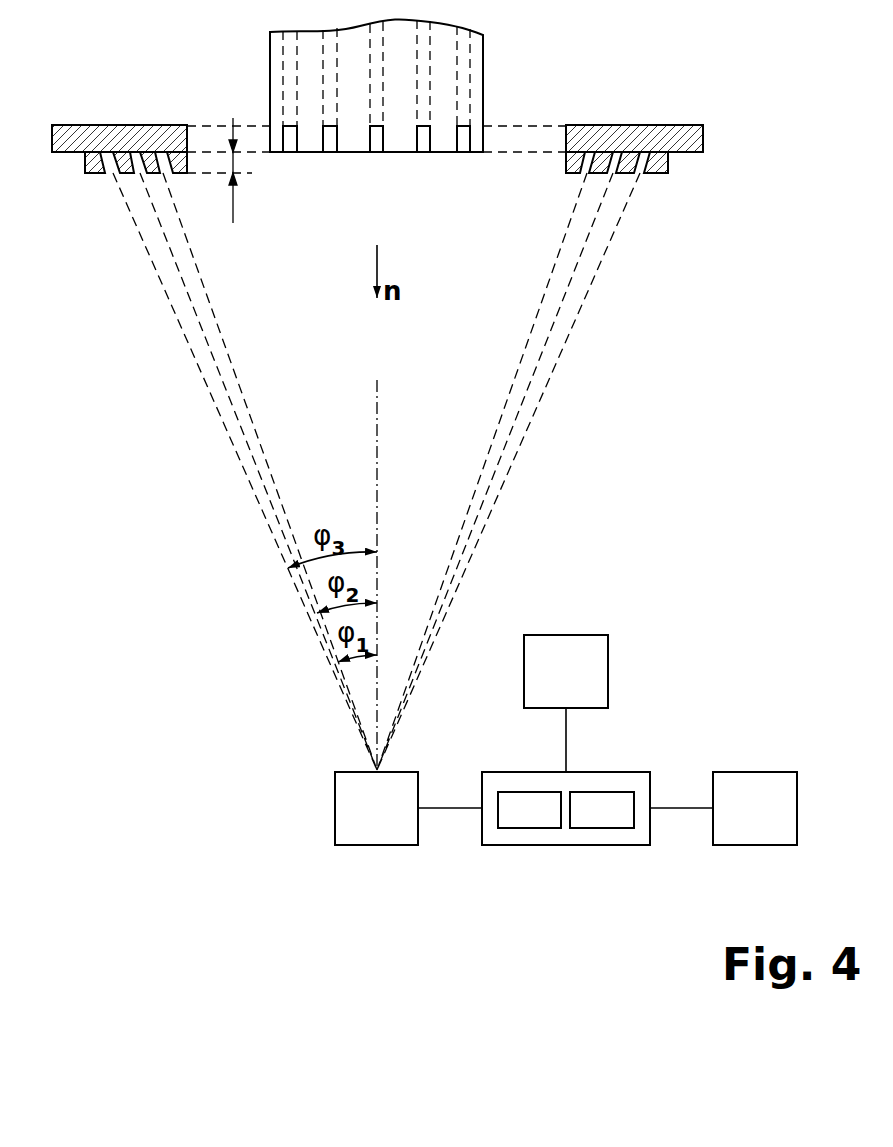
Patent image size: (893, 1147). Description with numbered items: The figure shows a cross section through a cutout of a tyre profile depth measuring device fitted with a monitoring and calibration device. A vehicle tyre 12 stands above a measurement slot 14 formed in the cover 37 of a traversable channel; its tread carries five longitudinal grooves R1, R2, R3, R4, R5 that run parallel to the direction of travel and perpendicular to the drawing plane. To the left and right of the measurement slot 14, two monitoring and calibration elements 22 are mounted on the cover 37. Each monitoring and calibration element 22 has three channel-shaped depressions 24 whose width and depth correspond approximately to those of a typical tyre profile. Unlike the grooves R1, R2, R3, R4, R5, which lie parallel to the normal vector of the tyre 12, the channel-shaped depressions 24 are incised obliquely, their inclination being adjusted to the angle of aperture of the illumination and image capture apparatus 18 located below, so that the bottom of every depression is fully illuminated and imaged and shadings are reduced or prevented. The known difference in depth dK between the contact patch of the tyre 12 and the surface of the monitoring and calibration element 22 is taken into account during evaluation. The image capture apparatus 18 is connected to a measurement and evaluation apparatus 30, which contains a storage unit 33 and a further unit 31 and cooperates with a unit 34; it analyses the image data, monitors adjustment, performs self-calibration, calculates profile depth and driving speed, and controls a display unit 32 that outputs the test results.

The vehicle tyre 12 is at (270, 62).
The measurement slot 14 is at (497, 117).
The image capture apparatus 18 is at (378, 848).
The monitoring and calibration element 22 is at (81, 177).
The channel-shaped depression 24 is at (158, 179).
The measurement and evaluation apparatus 30 is at (563, 847).
The first module 31 is at (527, 830).
The display unit 32 is at (753, 847).
The storage unit 33 is at (602, 830).
The memory unit 34 is at (568, 635).
The cover 37 is at (640, 125).
The longitudinal groove R1 is at (290, 143).
The longitudinal groove R2 is at (330, 143).
The longitudinal groove R3 is at (376, 143).
The longitudinal groove R4 is at (423, 143).
The longitudinal groove R5 is at (463, 143).
The difference in depth dK is at (233, 223).